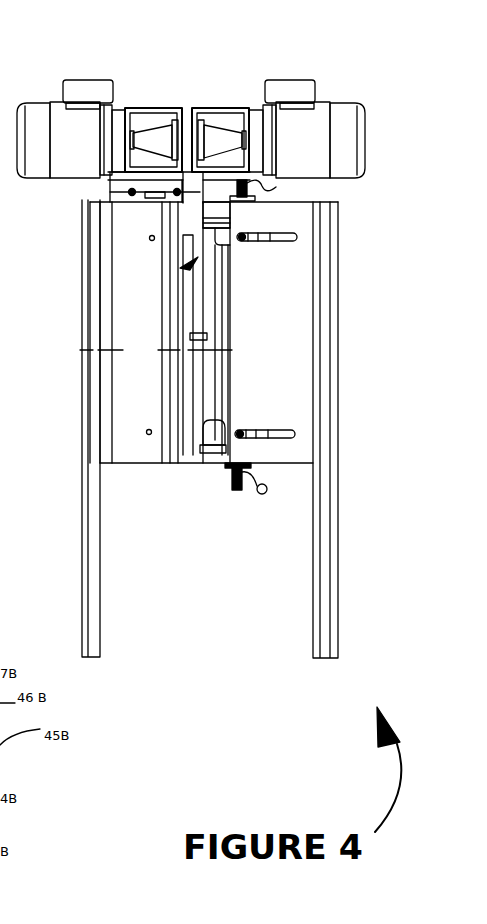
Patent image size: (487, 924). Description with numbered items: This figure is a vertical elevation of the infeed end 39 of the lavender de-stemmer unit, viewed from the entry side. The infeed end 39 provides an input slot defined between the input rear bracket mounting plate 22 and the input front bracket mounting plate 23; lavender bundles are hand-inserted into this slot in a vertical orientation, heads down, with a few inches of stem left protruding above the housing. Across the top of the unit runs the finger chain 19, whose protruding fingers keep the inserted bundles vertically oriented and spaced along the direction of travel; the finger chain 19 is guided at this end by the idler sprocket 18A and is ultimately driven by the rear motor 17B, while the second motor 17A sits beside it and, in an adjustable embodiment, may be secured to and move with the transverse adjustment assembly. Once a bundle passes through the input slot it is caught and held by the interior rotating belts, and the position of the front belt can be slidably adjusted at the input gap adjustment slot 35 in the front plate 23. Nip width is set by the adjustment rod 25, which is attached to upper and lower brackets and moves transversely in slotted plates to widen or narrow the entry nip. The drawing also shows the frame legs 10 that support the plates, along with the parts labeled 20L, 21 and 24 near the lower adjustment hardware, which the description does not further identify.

The frame leg 10 is at (88, 605).
The motor 17A is at (310, 97).
The rear motor 17B is at (62, 96).
The idler sprocket 18A is at (152, 203).
The finger chain 19 is at (98, 190).
The loop 20L is at (265, 494).
The connector 21 is at (276, 187).
The input rear bracket mounting plate 22 is at (122, 358).
The input front bracket mounting plate 23 is at (262, 390).
The actuator rod 24 is at (212, 413).
The adjustment rod 25 is at (237, 490).
The input gap adjustment slot 35 is at (285, 432).
The infeed end 39 is at (190, 265).